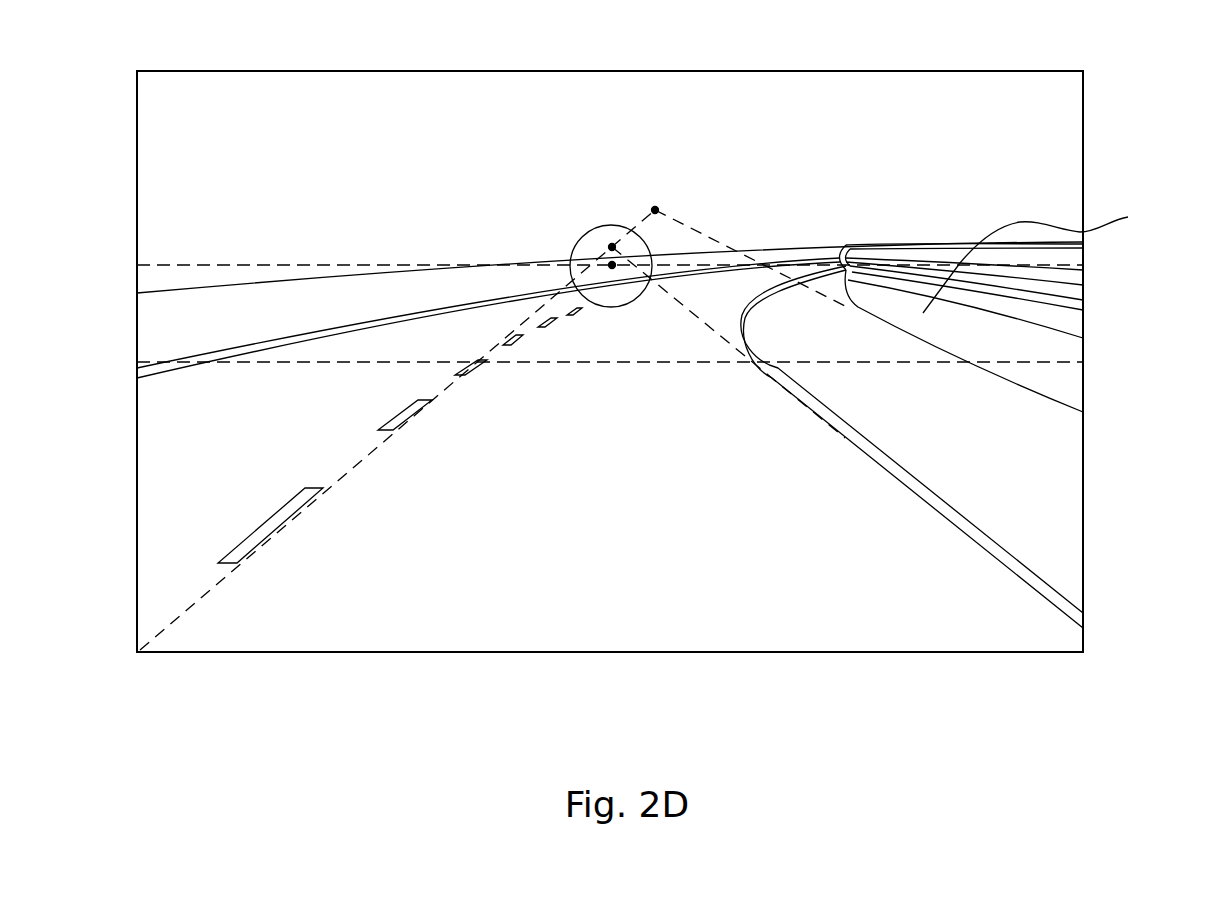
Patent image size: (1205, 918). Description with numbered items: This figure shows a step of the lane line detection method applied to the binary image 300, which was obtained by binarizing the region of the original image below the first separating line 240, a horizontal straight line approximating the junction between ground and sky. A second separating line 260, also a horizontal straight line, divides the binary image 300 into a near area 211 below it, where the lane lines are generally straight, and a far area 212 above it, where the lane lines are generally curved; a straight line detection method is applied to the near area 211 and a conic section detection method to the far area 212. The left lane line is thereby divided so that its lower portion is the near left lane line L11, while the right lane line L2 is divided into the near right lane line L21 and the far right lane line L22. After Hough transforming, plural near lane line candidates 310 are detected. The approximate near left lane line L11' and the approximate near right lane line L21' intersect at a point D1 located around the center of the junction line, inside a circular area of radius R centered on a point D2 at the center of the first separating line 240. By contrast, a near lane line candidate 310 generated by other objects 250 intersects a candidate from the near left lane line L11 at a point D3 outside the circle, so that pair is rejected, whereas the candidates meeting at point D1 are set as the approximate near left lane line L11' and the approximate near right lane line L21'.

The first separating line 240 is at (192, 265).
The second separating line 260 is at (260, 363).
The far area 212 is at (147, 325).
The near area 211 is at (147, 437).
The other objects 250 is at (1083, 231).
The binary image 300 is at (1083, 447).
The near lane line candidates 310 is at (748, 300).
The near left lane line L11 is at (317, 435).
The approximate near left lane line L11' is at (354, 430).
The right lane line L2 is at (545, 322).
The near right lane line L21 is at (963, 447).
The approximate near right lane line L21' is at (821, 553).
The far right lane line L22 is at (798, 262).
The point D1 is at (622, 250).
The point D2 is at (614, 236).
The point D3 is at (655, 210).